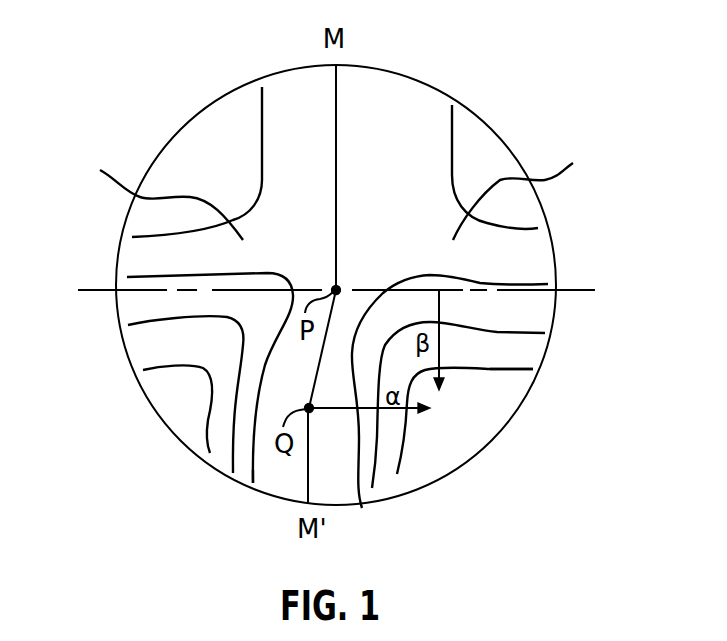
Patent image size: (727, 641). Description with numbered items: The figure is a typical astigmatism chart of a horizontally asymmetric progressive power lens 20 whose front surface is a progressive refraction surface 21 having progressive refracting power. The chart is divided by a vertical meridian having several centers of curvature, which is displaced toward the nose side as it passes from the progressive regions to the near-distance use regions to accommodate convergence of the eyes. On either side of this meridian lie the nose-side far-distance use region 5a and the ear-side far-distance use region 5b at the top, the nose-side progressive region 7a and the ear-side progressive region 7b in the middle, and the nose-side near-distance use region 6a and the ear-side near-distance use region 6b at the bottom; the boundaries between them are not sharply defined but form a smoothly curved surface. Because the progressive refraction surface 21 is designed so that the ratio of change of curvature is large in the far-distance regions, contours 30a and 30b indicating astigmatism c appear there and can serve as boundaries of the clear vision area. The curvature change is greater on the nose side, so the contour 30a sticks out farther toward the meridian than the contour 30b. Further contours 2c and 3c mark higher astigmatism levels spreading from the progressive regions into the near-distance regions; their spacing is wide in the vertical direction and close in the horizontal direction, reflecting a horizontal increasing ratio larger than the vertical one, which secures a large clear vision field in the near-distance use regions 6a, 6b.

The horizontally asymmetric progressive power lens 20 is at (457, 78).
The progressive refraction surface 21 is at (388, 92).
The contour indicating astigmatism at the nose-side far-distance use region 30a is at (262, 128).
The contour indicating astigmatism at the ear-side far-distance use region 30b is at (470, 160).
The nose-side far-distance use region 5a is at (150, 196).
The ear-side far-distance use region 5b is at (531, 194).
The nose-side progressive region 7a is at (187, 350).
The ear-side progressive region 7b is at (488, 357).
The nose-side near-distance use region 6a is at (264, 458).
The ear-side near-distance use region 6b is at (333, 473).
The second chord-parallel line 2c is at (484, 403).
The third chord-parallel line 3c is at (492, 416).
The astigmatism c is at (336, 254).